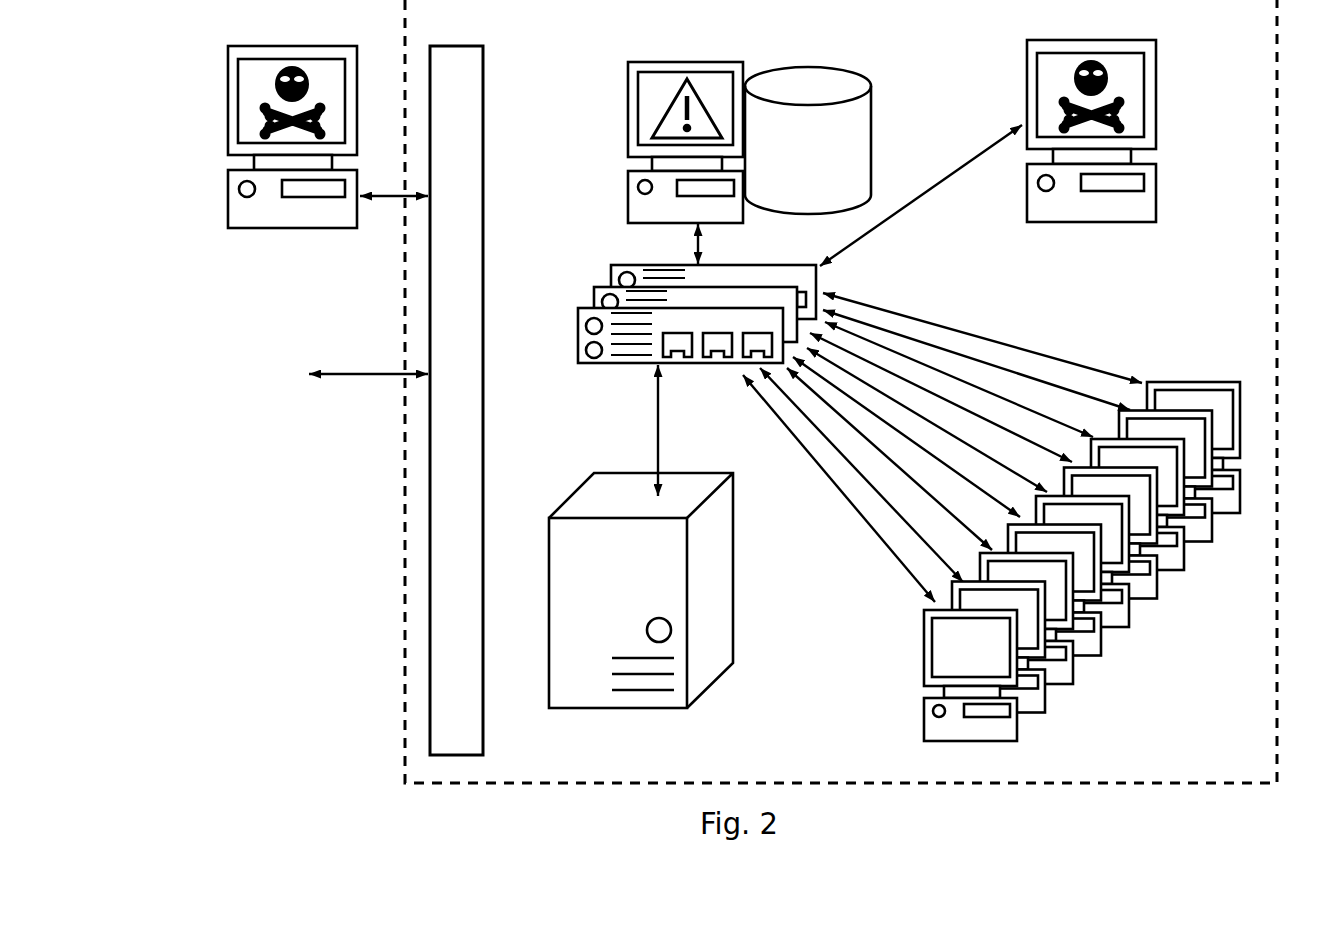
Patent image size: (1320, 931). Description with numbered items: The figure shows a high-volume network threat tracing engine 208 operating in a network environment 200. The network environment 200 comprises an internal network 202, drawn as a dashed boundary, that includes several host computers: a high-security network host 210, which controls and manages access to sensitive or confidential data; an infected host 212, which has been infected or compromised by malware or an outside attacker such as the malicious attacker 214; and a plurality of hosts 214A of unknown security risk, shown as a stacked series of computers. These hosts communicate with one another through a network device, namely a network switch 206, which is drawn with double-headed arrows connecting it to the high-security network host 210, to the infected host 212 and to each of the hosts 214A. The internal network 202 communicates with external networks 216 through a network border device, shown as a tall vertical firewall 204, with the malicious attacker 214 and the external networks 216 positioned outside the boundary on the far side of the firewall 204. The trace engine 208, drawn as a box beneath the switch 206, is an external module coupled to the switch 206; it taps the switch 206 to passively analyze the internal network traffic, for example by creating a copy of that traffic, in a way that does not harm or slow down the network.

The network environment 200 is at (376, 519).
The internal network 202 is at (841, 391).
The firewall 204 is at (456, 400).
The network switch 206 is at (697, 339).
The high-volume network threat tracing engine 208 is at (641, 536).
The high-security network host 210 is at (734, 145).
The infected host 212 is at (989, 156).
The malicious attacker 214 is at (328, 176).
The host of unknown security risk 214A is at (991, 517).
The external networks 216 is at (304, 387).